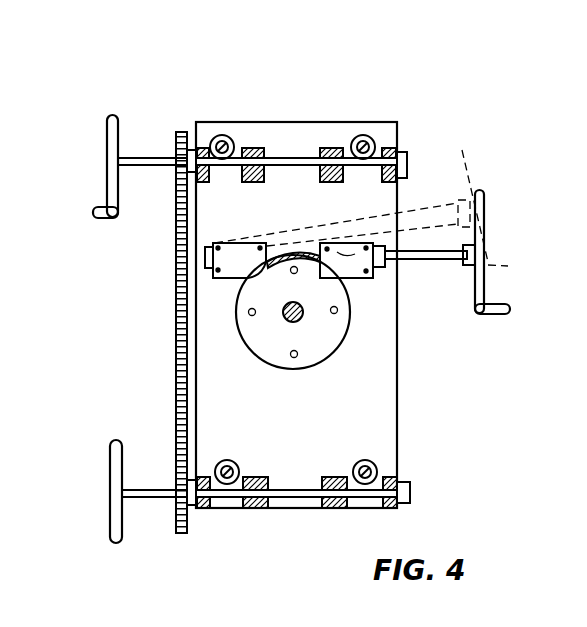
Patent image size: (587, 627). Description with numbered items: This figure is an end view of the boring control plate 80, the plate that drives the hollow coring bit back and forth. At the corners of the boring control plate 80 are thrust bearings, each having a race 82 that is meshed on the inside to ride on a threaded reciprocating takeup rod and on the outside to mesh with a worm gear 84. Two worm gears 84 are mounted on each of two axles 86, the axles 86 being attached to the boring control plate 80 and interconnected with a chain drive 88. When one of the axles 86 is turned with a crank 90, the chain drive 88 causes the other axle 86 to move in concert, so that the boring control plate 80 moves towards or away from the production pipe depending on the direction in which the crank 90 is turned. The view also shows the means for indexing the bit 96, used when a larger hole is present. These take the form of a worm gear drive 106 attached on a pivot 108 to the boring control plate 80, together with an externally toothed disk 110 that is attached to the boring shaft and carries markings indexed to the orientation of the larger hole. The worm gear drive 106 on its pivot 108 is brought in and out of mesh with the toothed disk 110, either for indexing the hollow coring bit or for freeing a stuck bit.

The boring control plate 80 is at (398, 410).
The race 82 is at (372, 137).
The worm gear 84 is at (237, 147).
The axle 86 is at (283, 158).
The chain drive 88 is at (174, 332).
The crank 90 is at (105, 152).
The means for indexing the bit 96 is at (405, 243).
The worm gear drive 106 is at (410, 261).
The pivot 108 is at (207, 257).
The externally toothed disk 110 is at (337, 337).